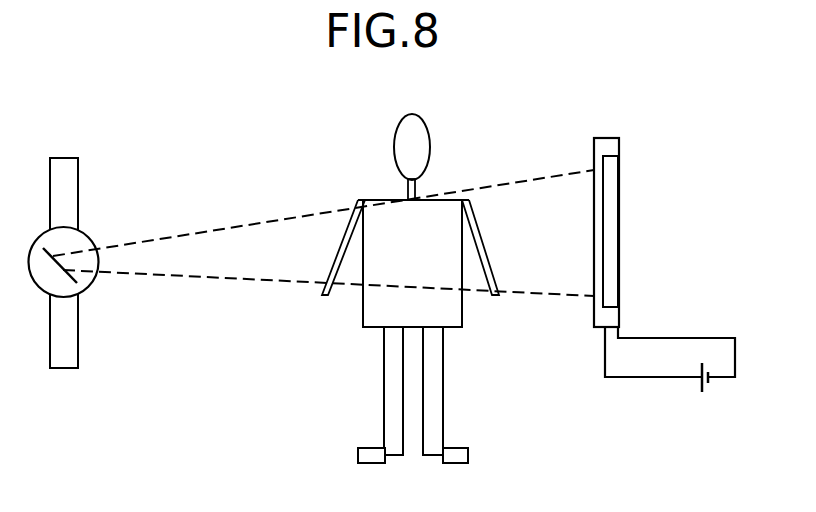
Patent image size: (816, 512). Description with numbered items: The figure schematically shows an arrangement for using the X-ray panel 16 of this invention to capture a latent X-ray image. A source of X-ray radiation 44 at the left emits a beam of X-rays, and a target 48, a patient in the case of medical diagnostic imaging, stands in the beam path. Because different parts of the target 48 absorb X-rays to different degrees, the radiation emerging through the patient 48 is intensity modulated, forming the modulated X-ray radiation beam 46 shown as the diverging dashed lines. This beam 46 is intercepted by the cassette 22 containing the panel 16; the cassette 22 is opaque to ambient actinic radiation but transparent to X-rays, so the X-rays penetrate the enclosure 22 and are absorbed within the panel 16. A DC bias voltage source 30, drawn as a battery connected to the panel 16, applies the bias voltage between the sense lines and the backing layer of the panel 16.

The X-ray panel 16 is at (611, 197).
The cassette 22 is at (621, 248).
The DC bias voltage source 30 is at (711, 401).
The source of X-ray radiation 44 is at (92, 283).
The modulated X-ray radiation beam 46 is at (549, 263).
The target 48 is at (378, 312).